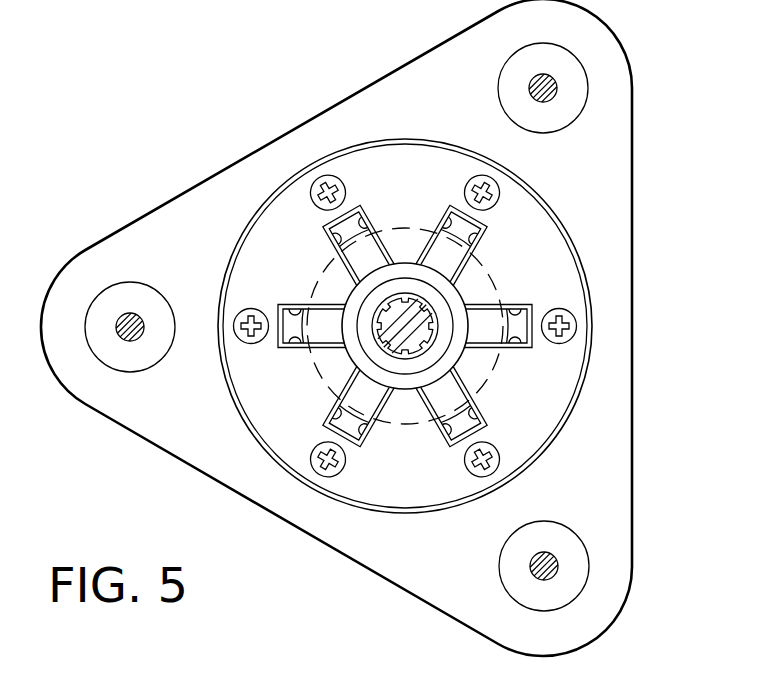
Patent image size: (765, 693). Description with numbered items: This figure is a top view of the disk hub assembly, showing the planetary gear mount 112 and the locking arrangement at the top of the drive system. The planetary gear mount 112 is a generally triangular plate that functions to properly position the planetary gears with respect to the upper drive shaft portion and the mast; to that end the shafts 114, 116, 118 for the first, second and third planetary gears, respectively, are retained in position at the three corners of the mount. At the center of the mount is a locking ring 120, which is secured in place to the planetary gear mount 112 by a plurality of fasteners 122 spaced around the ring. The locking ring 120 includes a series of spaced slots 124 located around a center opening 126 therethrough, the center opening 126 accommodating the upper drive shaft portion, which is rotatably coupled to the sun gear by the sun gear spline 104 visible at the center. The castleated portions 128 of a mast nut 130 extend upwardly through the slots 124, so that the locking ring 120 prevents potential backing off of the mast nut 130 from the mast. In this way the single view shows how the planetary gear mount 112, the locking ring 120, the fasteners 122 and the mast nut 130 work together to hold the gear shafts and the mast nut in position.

The sun gear spline 104 is at (428, 308).
The planetary gear mount 112 is at (222, 485).
The shaft 114 is at (130, 313).
The shaft 116 is at (546, 581).
The shaft 118 is at (531, 79).
The locking ring 120 is at (545, 450).
The fasteners 122 is at (317, 180).
The spaced slots 124 is at (303, 305).
The center opening 126 is at (418, 242).
The castleated portions 128 is at (460, 207).
The mast nut 130 is at (402, 389).